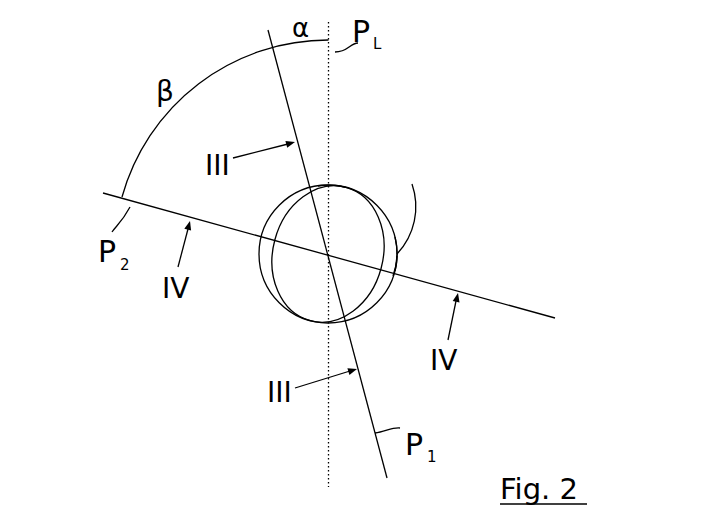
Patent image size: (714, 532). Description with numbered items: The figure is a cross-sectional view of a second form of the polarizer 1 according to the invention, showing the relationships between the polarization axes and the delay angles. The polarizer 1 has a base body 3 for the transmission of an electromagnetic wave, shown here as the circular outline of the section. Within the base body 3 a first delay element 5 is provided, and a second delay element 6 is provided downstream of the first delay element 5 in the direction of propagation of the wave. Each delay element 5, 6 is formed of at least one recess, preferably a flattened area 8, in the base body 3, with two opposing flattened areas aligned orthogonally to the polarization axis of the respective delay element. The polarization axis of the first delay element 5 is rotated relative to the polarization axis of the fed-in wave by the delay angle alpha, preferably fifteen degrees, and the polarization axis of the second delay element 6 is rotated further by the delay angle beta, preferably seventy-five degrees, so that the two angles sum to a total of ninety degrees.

The polarizer 1 is at (424, 188).
The base body 3 is at (284, 293).
The first delay element 5 is at (340, 176).
The second delay element 6 is at (421, 267).
The flattened area 8 is at (398, 252).